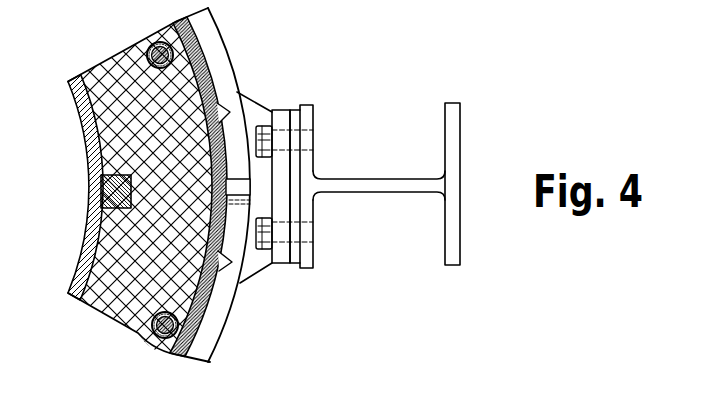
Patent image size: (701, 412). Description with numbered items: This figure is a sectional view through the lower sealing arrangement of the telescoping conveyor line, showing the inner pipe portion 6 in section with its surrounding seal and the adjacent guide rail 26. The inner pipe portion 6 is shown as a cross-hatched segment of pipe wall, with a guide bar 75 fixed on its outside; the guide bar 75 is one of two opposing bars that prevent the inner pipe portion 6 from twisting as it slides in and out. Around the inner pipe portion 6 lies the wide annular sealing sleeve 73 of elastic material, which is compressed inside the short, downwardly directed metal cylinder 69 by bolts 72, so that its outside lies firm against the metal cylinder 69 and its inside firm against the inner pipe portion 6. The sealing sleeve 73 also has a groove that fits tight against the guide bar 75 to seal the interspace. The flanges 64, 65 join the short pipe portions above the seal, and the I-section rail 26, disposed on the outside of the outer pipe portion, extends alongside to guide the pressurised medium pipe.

The inner pipe portion 6 is at (82, 257).
The rail 26 is at (451, 123).
The flange 64 is at (253, 113).
The flange 65 is at (216, 50).
The metal cylinder 69 is at (215, 303).
The bolts 72 is at (148, 45).
The sealing sleeve 73 is at (128, 292).
The guide bar 75 is at (104, 175).